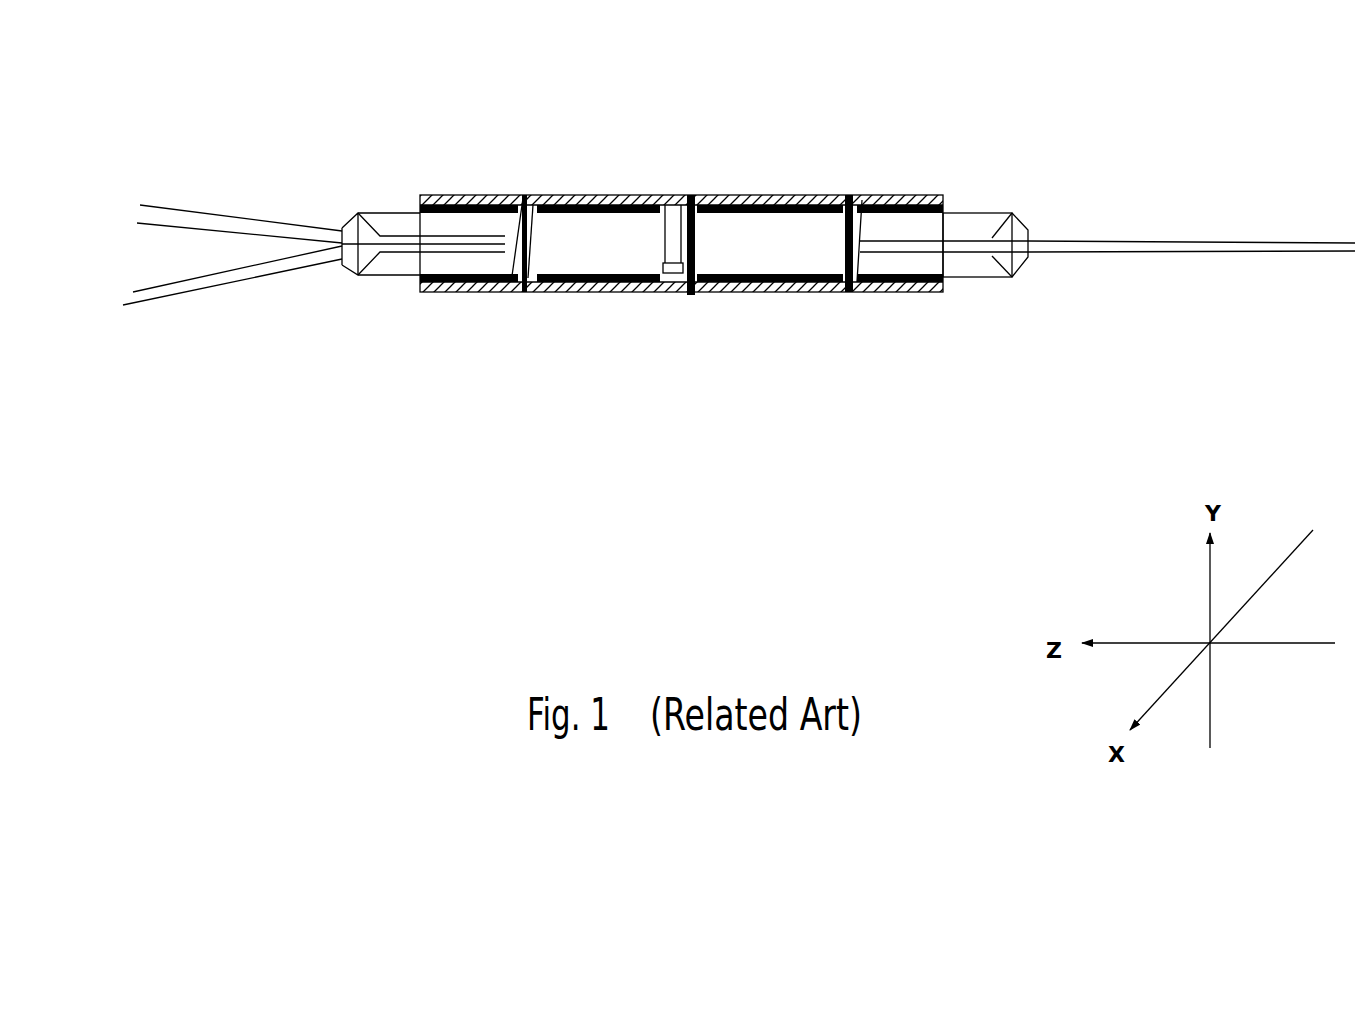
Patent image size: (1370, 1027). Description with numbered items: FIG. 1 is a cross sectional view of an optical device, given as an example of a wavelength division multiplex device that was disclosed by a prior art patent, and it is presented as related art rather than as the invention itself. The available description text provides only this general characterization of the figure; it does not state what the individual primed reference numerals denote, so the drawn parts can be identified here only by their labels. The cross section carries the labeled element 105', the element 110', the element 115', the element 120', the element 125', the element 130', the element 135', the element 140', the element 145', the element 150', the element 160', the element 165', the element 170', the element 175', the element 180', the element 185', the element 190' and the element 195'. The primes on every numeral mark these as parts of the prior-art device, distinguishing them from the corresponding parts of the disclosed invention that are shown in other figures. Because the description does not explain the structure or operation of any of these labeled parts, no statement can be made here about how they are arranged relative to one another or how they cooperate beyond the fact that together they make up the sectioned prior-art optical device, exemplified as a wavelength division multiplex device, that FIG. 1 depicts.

The optical element 105' is at (712, 179).
The cavity 110' is at (598, 180).
The optical element 115' is at (671, 148).
The housing 120' is at (679, 191).
The housing lining 125' is at (598, 371).
The housing lining 130' is at (400, 184).
The input ferrule 135' is at (366, 304).
The input optical fiber 140' is at (188, 198).
The input optical fiber 145' is at (182, 298).
The lens 150' is at (465, 340).
The cavity 160' is at (776, 334).
The housing lining 165' is at (832, 332).
The partition 170' is at (872, 187).
The output ferrule 175' is at (1059, 273).
The housing lining 180' is at (970, 296).
The output optical fiber 185' is at (1107, 206).
The lens 190' is at (960, 180).
The central partition 195' is at (726, 364).